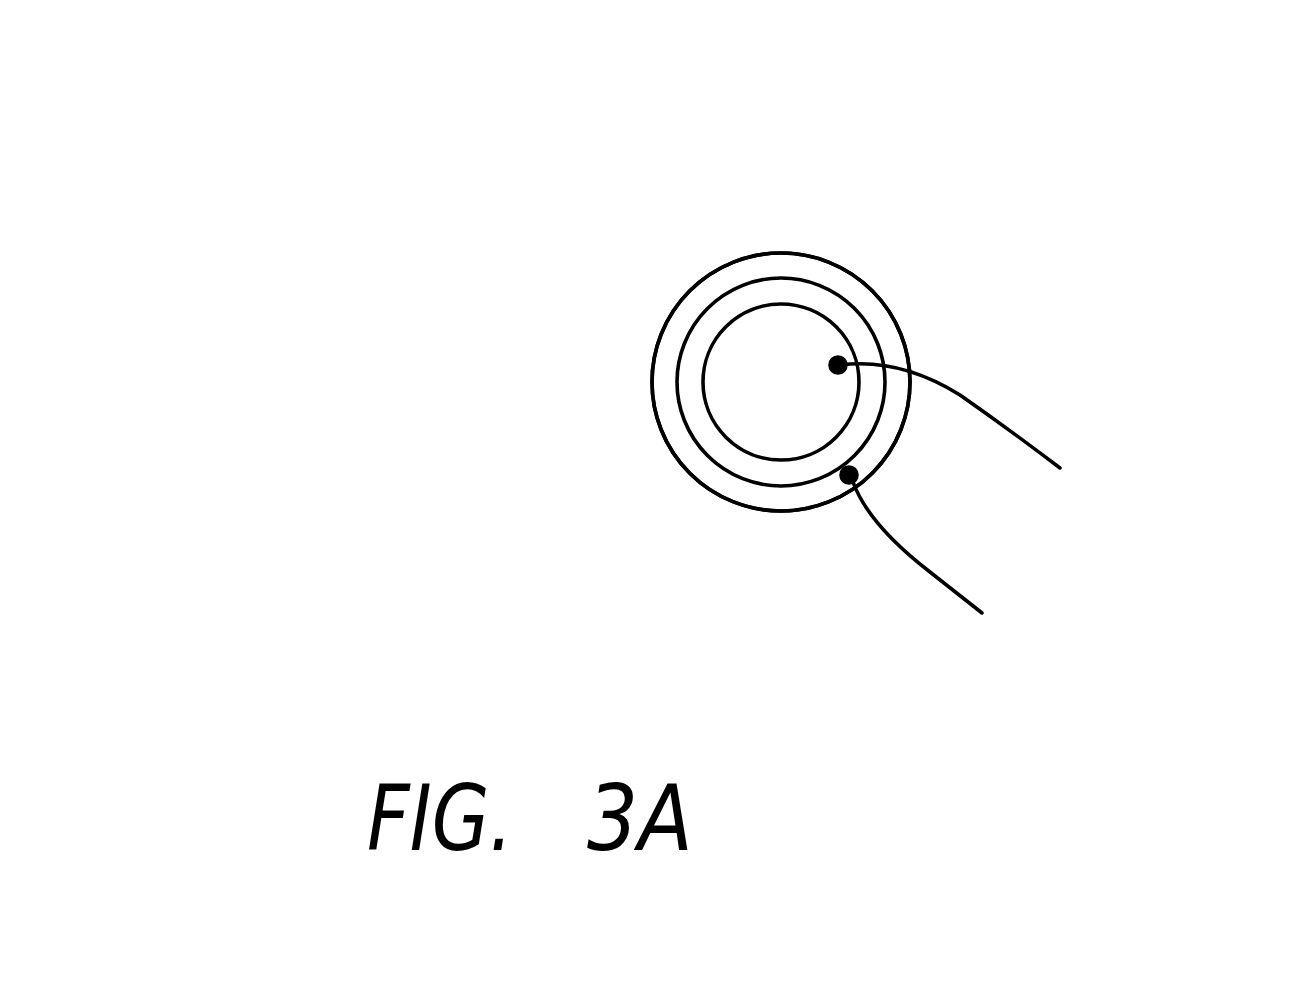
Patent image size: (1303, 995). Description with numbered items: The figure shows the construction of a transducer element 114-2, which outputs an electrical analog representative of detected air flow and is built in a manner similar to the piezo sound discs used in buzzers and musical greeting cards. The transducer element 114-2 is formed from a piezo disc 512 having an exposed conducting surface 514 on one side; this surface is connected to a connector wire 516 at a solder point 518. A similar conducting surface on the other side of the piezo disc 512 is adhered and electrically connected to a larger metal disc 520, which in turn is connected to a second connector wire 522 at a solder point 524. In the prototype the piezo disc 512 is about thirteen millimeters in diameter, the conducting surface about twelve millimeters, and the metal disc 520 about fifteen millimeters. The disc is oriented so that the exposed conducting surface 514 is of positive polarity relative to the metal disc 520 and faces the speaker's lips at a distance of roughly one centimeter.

The transducer element 114-2 is at (630, 380).
The piezo disc 512 is at (702, 420).
The exposed conducting surface 514 is at (752, 368).
The connector wire 516 is at (998, 410).
The solder point 518 is at (838, 360).
The metal disc 520 is at (713, 473).
The connector wire 522 is at (948, 585).
The solder point 524 is at (843, 482).